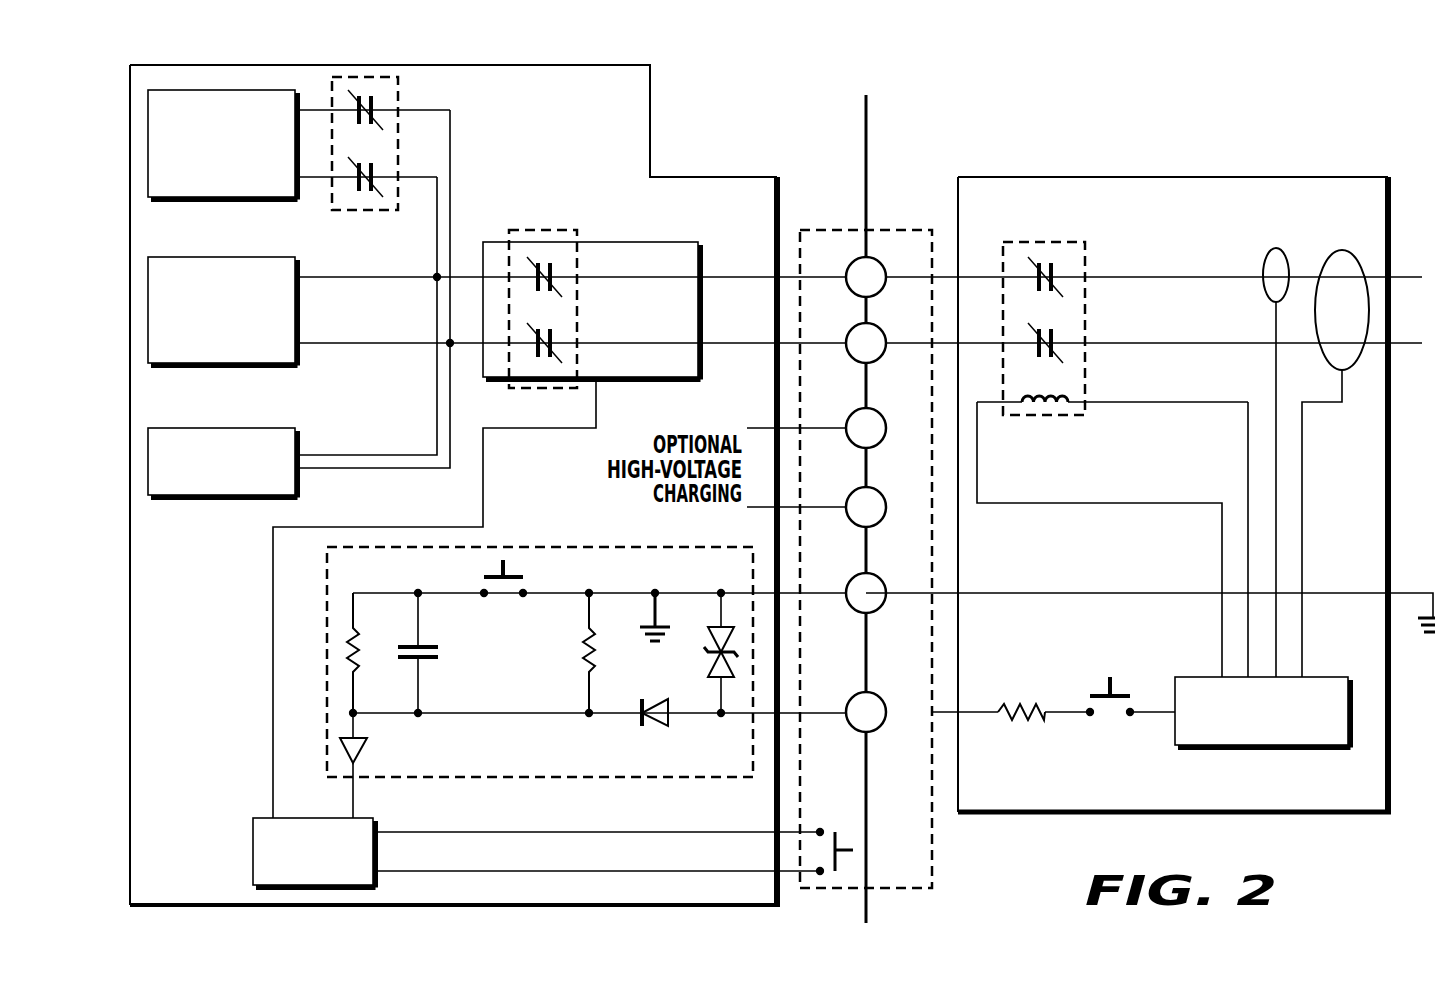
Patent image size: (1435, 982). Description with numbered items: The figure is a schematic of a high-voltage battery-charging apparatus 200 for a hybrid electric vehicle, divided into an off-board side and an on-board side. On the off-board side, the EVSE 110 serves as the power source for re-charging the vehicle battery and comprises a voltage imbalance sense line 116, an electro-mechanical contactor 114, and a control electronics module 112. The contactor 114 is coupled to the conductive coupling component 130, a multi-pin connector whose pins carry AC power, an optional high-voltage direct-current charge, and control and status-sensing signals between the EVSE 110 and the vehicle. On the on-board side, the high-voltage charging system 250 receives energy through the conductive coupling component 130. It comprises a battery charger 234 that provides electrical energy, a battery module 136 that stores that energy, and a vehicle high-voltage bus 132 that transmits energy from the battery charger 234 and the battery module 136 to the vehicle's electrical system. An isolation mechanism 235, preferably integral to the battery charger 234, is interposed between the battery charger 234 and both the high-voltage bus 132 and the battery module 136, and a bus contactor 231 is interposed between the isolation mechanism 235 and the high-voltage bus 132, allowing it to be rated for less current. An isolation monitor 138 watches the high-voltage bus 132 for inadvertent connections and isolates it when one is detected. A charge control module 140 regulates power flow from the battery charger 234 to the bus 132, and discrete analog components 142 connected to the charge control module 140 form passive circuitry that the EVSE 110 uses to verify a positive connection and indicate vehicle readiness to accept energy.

The high-voltage battery-charging apparatus 200 is at (1241, 125).
The high-voltage charging system 250 is at (570, 131).
The vehicle high-voltage bus 132 is at (221, 201).
The battery module 136 is at (222, 367).
The isolation monitor 138 is at (196, 498).
The bus contactor 231 is at (376, 212).
The battery charger 234 is at (640, 242).
The isolation mechanism 235 is at (553, 230).
The conductive coupling component 130 is at (912, 230).
The discrete analog components 142 is at (550, 778).
The charge control module 140 is at (253, 850).
The EVSE 110 is at (1215, 217).
The electro-mechanical contactor 114 is at (1058, 242).
The voltage imbalance sense line 116 is at (1342, 250).
The control electronics module 112 is at (1262, 748).